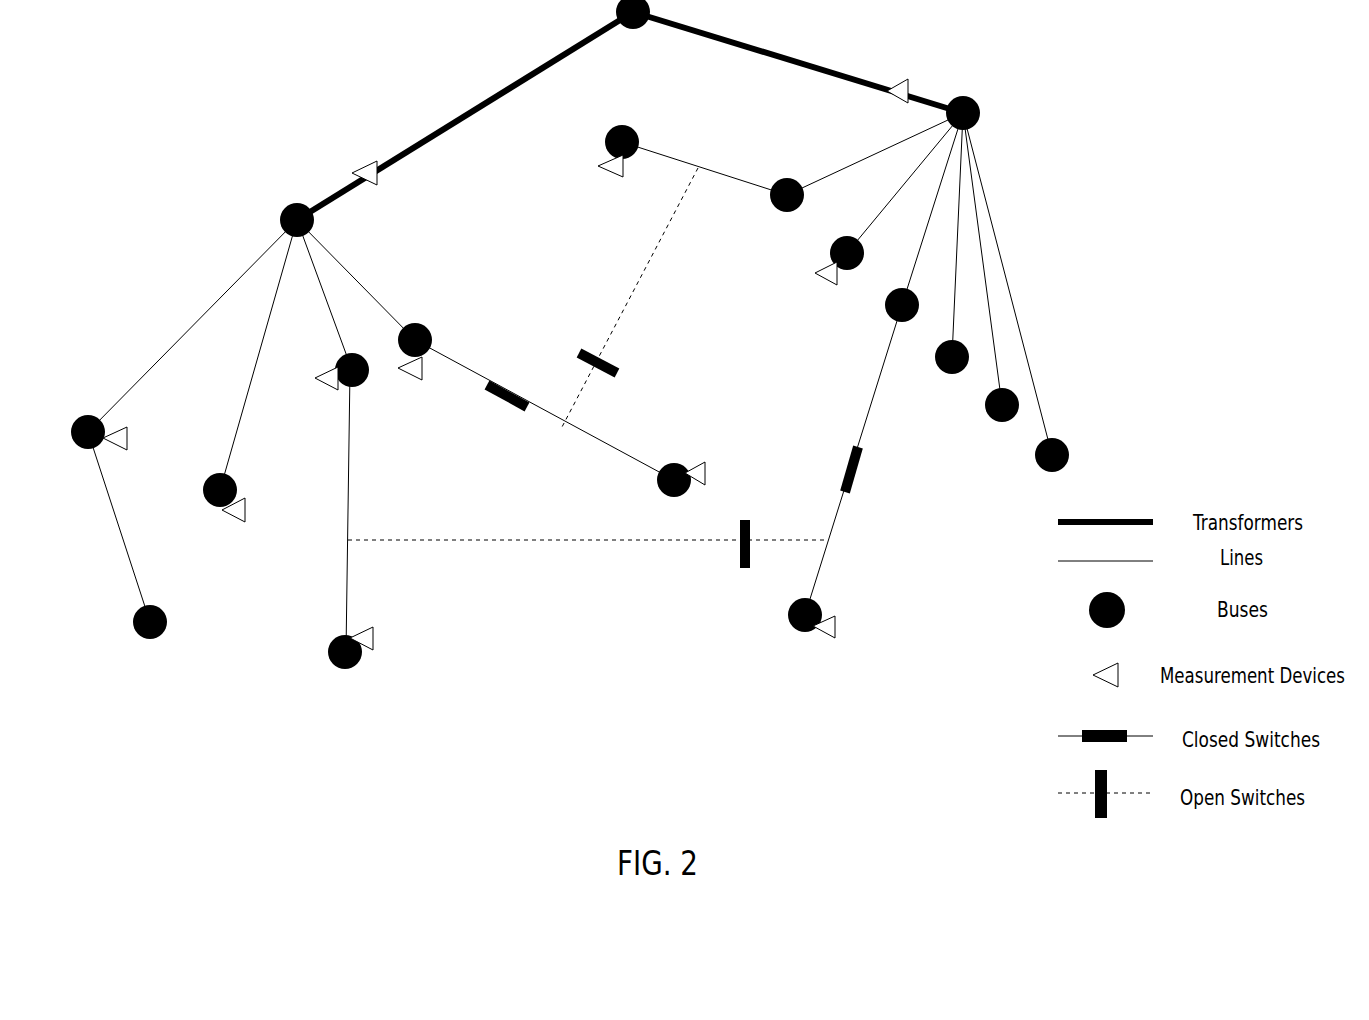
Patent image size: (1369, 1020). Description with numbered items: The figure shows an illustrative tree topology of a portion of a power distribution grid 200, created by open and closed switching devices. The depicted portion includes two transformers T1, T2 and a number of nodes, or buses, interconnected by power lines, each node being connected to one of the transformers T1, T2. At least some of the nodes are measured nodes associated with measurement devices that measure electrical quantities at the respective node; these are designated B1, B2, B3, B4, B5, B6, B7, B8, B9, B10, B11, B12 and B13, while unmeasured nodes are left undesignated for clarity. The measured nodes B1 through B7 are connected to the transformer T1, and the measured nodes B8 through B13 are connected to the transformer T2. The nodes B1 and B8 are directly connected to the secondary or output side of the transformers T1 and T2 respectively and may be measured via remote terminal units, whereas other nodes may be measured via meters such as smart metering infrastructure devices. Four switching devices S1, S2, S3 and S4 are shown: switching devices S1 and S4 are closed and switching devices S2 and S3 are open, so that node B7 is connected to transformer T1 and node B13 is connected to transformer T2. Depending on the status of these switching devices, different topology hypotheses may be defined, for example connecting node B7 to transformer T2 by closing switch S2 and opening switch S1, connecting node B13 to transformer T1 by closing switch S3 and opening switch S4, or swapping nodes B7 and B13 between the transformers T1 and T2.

The power distribution grid 200 is at (199, 123).
The transformer T1 is at (465, 116).
The transformer T2 is at (798, 62).
The measured node B1 is at (251, 346).
The measured node B2 is at (102, 505).
The measured node B3 is at (204, 497).
The measured node B4 is at (337, 493).
The measured node B5 is at (328, 648).
The measured node B6 is at (536, 391).
The measured node B7 is at (658, 488).
The measured node B8 is at (919, 262).
The measured node B9 is at (773, 198).
The measured node B10 is at (692, 151).
The measured node B11 is at (856, 255).
The measured node B12 is at (862, 451).
The measured node B13 is at (843, 627).
The switching device S1 is at (507, 387).
The switching device S2 is at (630, 297).
The switching device S3 is at (588, 553).
The switching device S4 is at (869, 469).